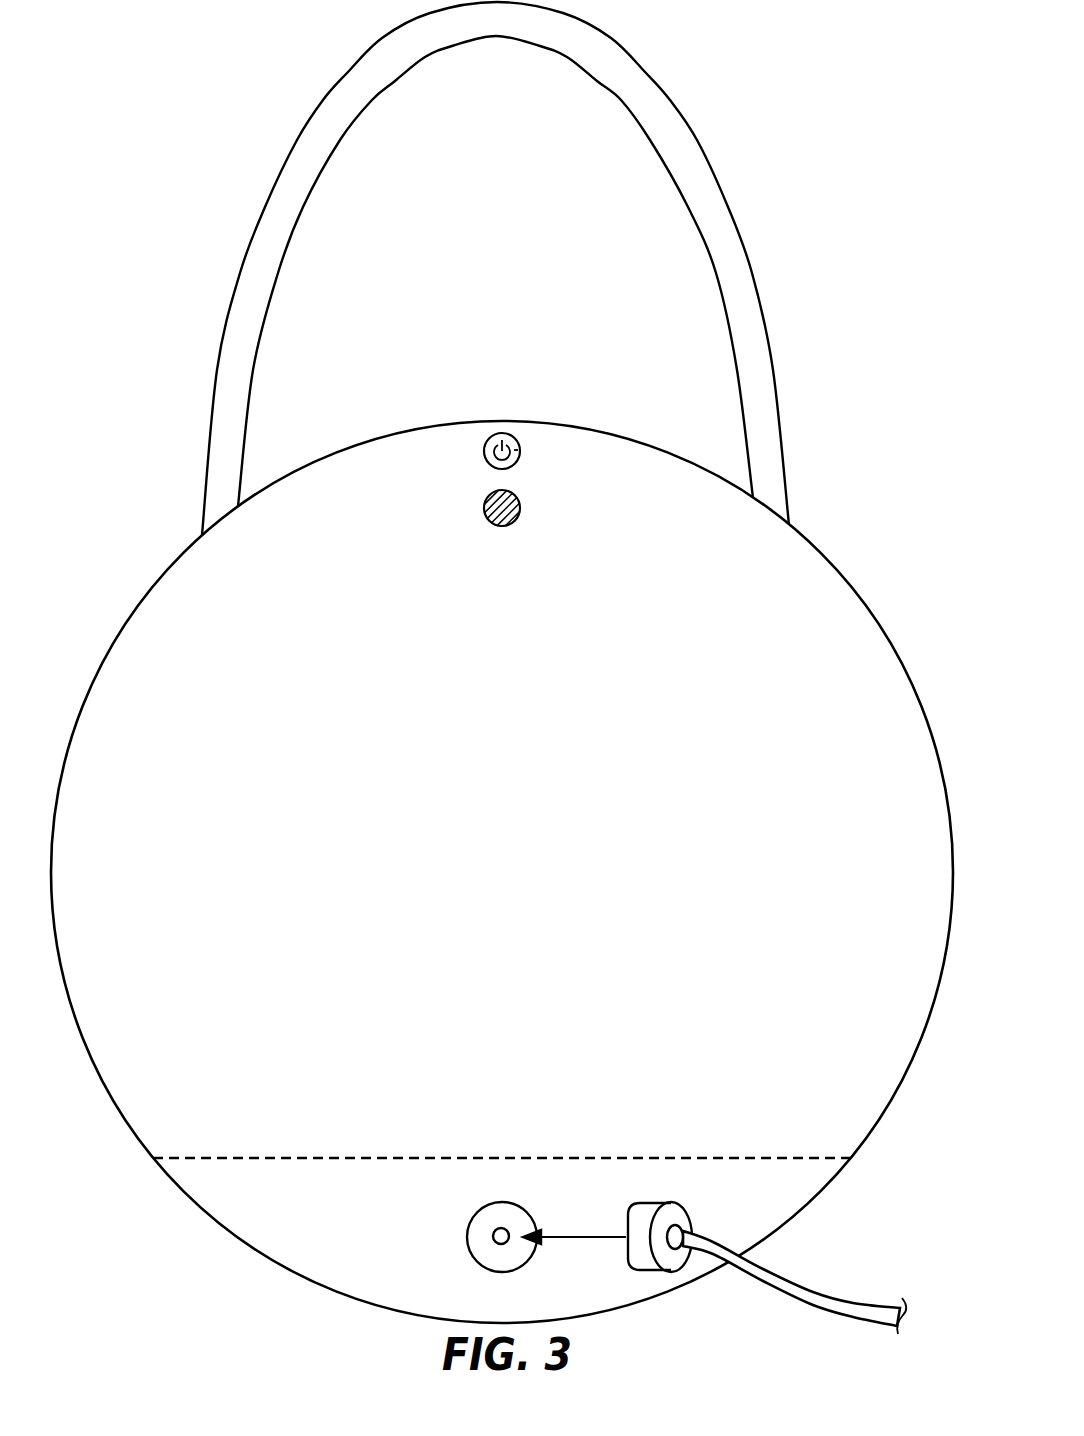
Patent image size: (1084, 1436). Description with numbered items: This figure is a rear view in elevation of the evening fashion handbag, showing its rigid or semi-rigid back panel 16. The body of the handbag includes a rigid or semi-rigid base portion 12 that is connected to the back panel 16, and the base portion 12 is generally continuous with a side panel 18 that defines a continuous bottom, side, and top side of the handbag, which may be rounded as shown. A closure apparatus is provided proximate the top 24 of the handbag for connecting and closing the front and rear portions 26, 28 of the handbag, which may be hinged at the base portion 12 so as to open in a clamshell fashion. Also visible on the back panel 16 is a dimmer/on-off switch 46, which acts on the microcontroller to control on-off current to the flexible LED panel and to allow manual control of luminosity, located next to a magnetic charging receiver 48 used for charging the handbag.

The base portion 12 is at (502, 677).
The back panel 16 is at (860, 592).
The side panel 18 is at (640, 95).
The top 24 is at (502, 422).
The front portion 26 is at (280, 477).
The rear portion 28 is at (742, 485).
The dimmer/on-off switch 46 is at (520, 506).
The magnetic charging receiver 48 is at (467, 1237).